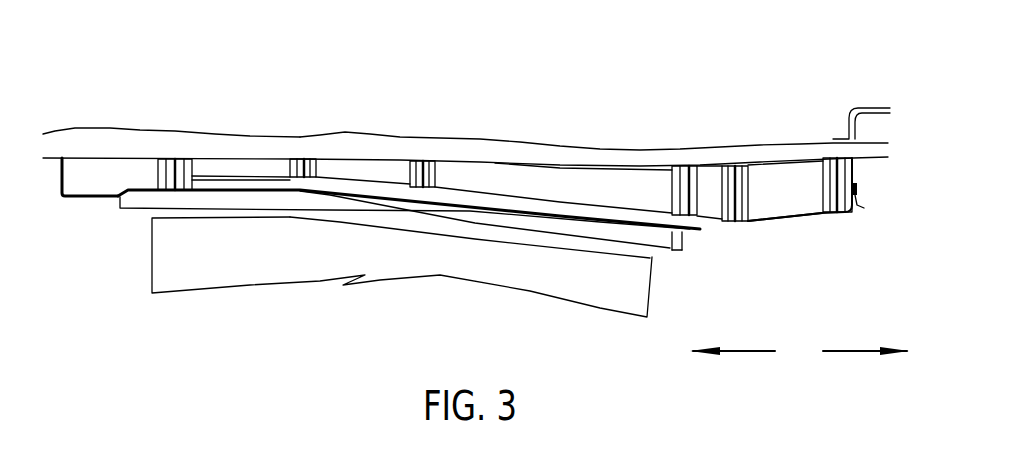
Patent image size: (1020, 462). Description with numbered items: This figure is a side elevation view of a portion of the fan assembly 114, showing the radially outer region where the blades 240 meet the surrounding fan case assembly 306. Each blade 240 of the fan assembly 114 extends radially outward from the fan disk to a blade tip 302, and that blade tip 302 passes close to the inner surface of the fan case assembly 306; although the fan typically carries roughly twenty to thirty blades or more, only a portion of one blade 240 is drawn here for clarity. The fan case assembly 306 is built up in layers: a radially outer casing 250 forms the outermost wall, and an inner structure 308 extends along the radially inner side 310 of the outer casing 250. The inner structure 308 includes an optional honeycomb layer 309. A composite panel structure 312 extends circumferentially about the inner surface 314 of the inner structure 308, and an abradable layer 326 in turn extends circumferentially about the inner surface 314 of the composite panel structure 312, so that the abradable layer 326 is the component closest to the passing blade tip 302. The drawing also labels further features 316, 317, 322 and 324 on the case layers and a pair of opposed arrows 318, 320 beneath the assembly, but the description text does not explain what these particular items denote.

The fan assembly 114 is at (168, 65).
The radially outer casing 250 is at (393, 143).
The fan case assembly 306 is at (684, 125).
The inner structure 308 is at (572, 210).
The honeycomb layer 309 is at (640, 200).
The radially inner side 310 is at (477, 162).
The composite panel structure 312 is at (77, 202).
The inner surface 314 is at (681, 233).
The mounting plate 316 is at (112, 180).
The spacer region 317 is at (783, 195).
The first direction 318 is at (752, 352).
The second direction 320 is at (846, 352).
The end flange 322 is at (62, 197).
The seal 324 is at (857, 190).
The abradable layer 326 is at (663, 248).
The blade tip 302 is at (287, 218).
The blades 240 is at (218, 272).